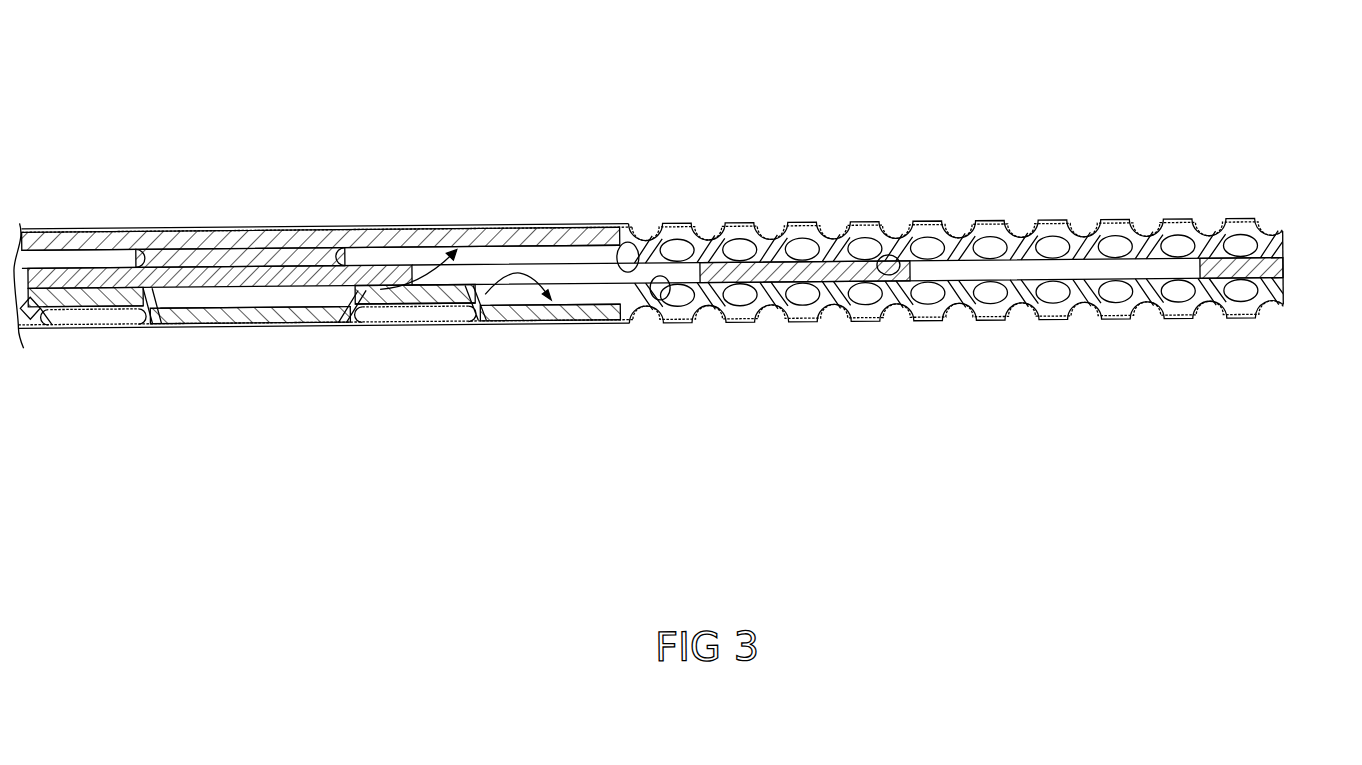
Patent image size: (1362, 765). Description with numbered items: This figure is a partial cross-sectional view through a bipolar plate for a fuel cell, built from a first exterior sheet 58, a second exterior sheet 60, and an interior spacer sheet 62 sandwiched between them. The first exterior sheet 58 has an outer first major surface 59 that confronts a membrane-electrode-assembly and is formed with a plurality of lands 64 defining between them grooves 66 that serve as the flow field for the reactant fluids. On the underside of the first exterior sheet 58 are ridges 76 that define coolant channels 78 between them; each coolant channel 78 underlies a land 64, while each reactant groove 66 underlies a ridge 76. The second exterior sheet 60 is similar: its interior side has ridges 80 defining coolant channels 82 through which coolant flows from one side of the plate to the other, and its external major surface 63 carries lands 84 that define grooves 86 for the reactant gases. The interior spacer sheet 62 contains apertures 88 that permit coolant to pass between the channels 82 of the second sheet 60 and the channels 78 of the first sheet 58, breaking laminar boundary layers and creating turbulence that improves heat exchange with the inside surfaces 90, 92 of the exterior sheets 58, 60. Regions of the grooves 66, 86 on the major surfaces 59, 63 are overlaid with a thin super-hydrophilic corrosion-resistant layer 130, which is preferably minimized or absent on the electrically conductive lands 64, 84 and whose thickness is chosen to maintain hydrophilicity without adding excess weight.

The first exterior sheet 58 is at (85, 224).
The first major surface 59 is at (573, 195).
The second exterior sheet 60 is at (242, 324).
The interior spacer sheet 62 is at (1286, 273).
The major surface 63 is at (523, 350).
The lands 64 is at (679, 222).
The grooves 66 is at (708, 224).
The ridges 76 is at (618, 245).
The channels 78 is at (804, 250).
The ridges 80 is at (660, 300).
The channels 82 is at (735, 290).
The lands 84 is at (800, 325).
The grooves 86 is at (895, 322).
The apertures 88 is at (979, 272).
The inside surface 90 is at (378, 283).
The inside surface 92 is at (485, 293).
The super-hydrophilic corrosion-resistant layer 130 is at (228, 224).